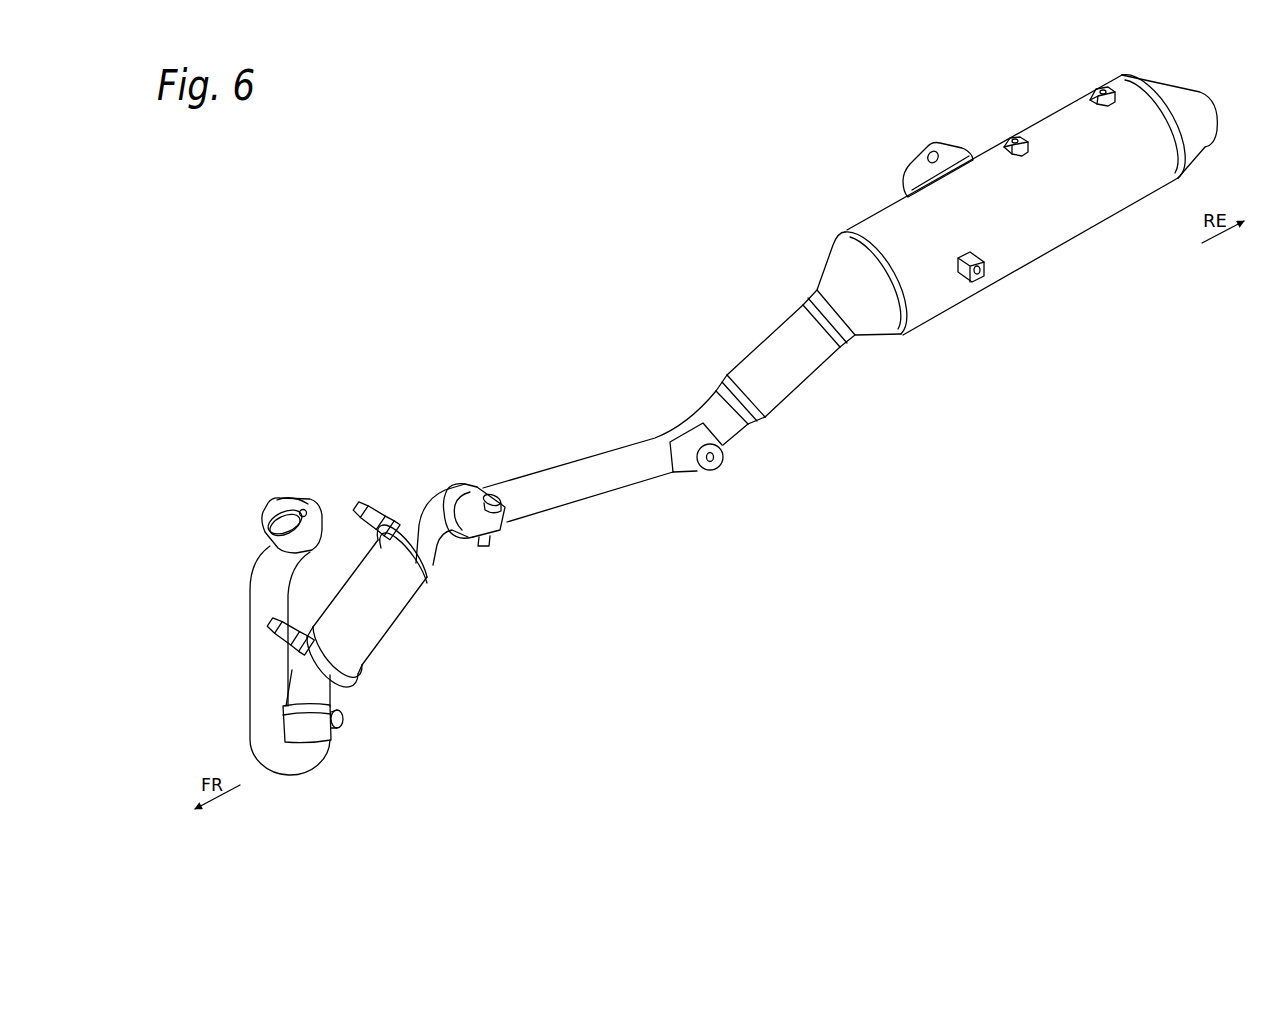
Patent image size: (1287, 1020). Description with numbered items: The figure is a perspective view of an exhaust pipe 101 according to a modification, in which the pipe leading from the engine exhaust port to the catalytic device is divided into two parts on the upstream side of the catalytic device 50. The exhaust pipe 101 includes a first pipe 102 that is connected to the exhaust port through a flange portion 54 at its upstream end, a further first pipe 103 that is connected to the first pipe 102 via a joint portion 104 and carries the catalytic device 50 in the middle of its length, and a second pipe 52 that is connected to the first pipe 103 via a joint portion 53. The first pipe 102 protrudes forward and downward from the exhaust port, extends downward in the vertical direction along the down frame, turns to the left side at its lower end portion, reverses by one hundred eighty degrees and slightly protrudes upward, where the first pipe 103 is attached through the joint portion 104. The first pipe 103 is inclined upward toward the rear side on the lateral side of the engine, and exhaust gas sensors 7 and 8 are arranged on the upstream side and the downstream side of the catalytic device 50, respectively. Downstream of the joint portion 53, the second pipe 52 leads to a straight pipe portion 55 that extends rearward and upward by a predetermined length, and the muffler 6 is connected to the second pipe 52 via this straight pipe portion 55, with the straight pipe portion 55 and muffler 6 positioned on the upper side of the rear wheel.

The muffler 6 is at (1043, 248).
The exhaust gas sensor 7 is at (270, 623).
The exhaust gas sensor 8 is at (360, 508).
The catalytic device 50 is at (390, 615).
The second pipe 52 is at (588, 495).
The joint portion 53 is at (500, 535).
The flange portion 54 is at (280, 498).
The straight pipe portion 55 is at (793, 385).
The exhaust pipe 101 is at (722, 606).
The first pipe 102 is at (252, 552).
The first pipe 103 is at (430, 497).
The joint portion 104 is at (323, 737).